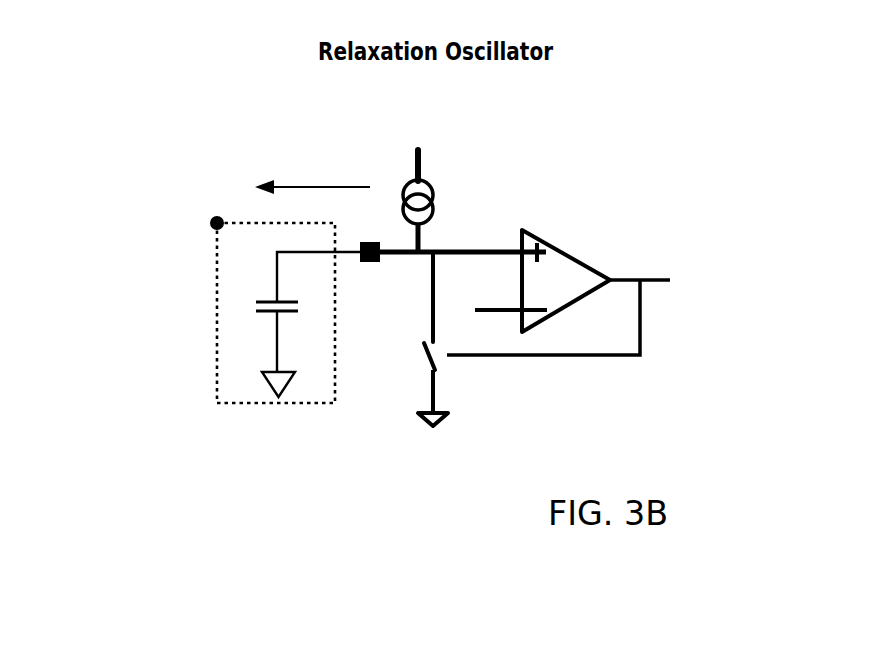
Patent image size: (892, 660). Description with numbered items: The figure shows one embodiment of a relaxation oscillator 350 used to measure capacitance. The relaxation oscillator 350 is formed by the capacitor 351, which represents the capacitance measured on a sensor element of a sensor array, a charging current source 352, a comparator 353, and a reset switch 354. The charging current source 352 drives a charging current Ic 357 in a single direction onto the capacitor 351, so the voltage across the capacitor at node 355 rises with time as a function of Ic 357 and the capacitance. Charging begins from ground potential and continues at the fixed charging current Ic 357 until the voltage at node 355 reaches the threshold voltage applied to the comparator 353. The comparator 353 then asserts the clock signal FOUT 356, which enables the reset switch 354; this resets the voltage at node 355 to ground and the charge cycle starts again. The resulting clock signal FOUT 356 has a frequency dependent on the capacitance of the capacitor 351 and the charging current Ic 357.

The relaxation oscillator 350 is at (617, 128).
The capacitor 351 is at (216, 397).
The charging current source 352 is at (432, 182).
The comparator 353 is at (570, 253).
The reset switch 354 is at (436, 392).
The node 355 is at (212, 224).
The clock signal FOUT 356 is at (646, 251).
The charging current Ic 357 is at (312, 174).